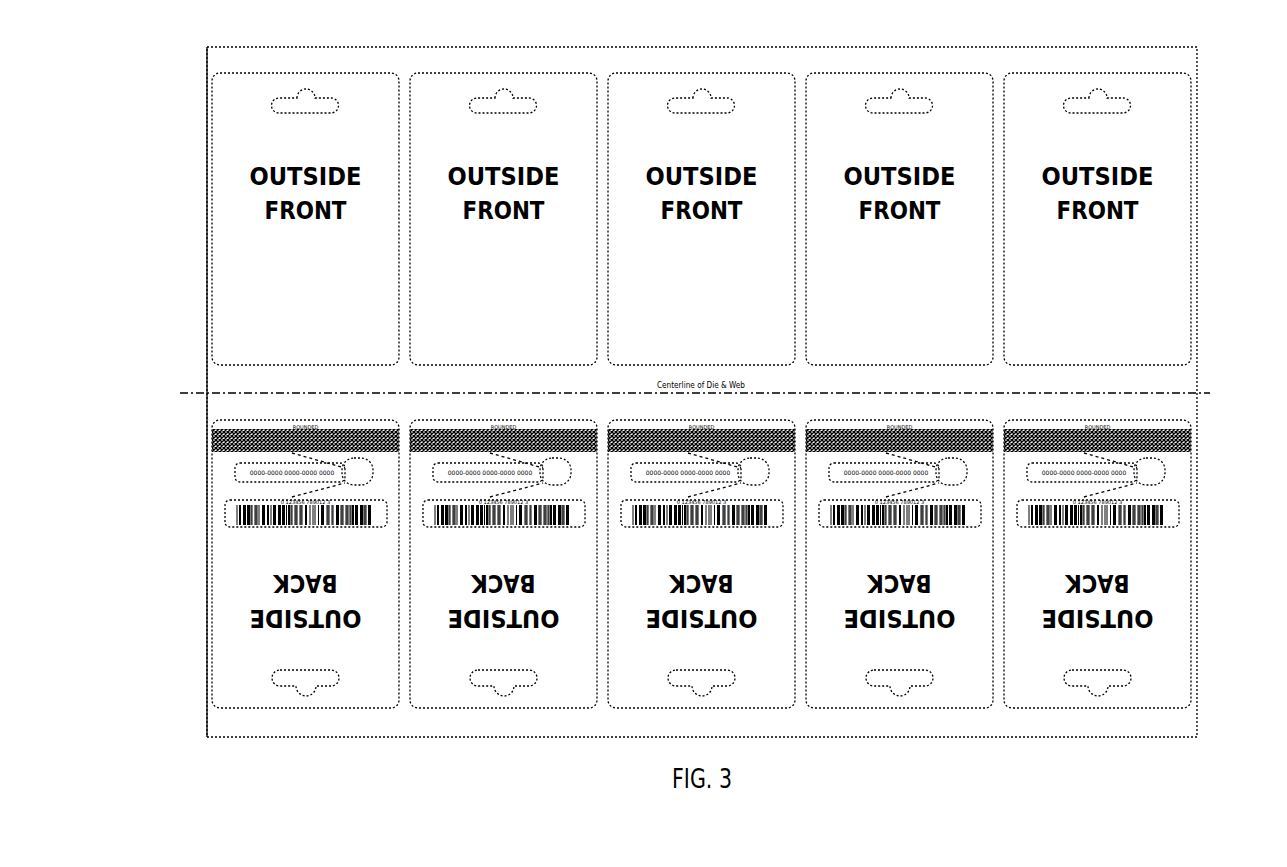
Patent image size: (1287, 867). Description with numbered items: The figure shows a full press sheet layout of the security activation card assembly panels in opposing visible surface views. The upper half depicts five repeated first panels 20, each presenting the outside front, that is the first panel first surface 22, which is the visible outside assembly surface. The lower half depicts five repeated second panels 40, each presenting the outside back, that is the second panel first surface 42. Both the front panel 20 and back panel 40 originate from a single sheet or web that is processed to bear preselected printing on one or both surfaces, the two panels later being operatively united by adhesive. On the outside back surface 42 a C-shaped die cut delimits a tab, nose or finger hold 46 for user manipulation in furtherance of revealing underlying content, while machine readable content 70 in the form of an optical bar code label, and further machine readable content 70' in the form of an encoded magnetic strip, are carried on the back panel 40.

The first panel 20 is at (678, 219).
The first panel first surface 22 is at (357, 285).
The second panel 40 is at (703, 548).
The second panel first surface 42 is at (352, 661).
The tab, nose or finger hold 46 is at (1167, 470).
The machine readable content 70 is at (1129, 524).
The further machine readable content 70' is at (1126, 420).